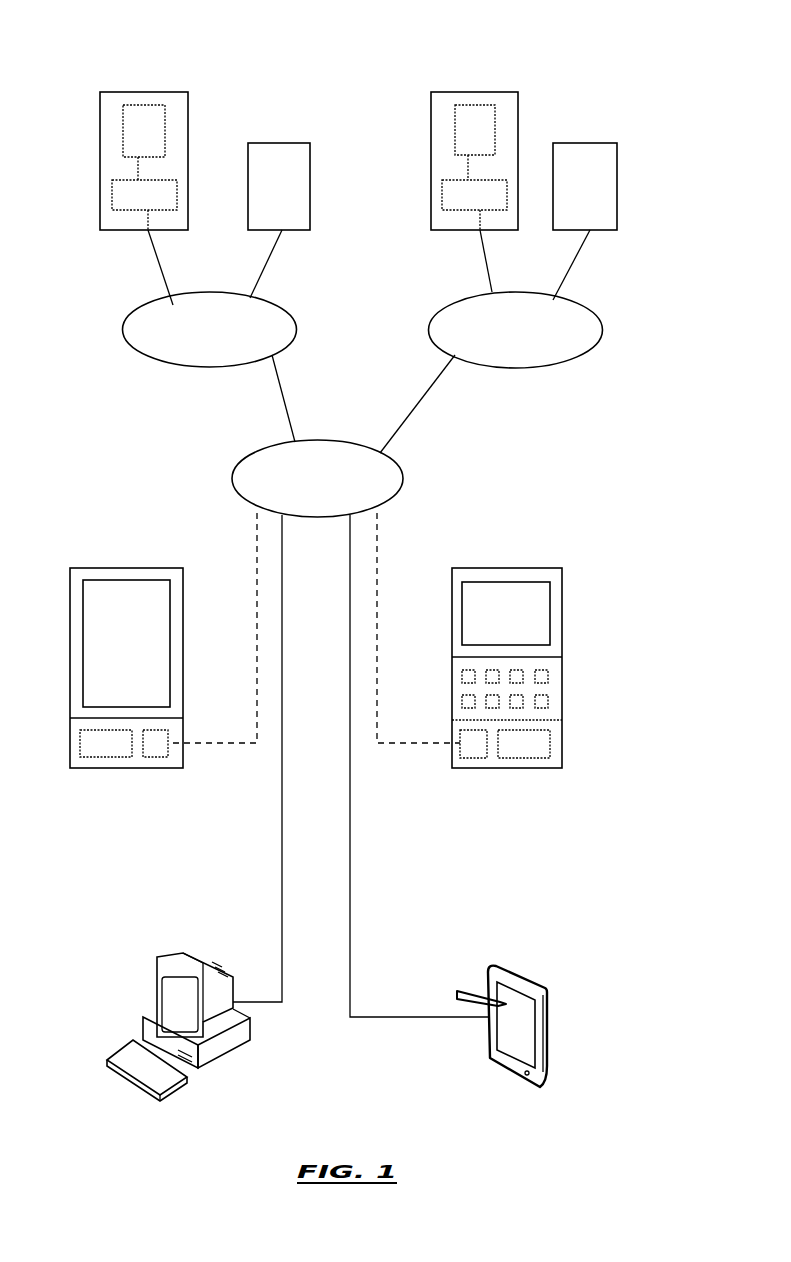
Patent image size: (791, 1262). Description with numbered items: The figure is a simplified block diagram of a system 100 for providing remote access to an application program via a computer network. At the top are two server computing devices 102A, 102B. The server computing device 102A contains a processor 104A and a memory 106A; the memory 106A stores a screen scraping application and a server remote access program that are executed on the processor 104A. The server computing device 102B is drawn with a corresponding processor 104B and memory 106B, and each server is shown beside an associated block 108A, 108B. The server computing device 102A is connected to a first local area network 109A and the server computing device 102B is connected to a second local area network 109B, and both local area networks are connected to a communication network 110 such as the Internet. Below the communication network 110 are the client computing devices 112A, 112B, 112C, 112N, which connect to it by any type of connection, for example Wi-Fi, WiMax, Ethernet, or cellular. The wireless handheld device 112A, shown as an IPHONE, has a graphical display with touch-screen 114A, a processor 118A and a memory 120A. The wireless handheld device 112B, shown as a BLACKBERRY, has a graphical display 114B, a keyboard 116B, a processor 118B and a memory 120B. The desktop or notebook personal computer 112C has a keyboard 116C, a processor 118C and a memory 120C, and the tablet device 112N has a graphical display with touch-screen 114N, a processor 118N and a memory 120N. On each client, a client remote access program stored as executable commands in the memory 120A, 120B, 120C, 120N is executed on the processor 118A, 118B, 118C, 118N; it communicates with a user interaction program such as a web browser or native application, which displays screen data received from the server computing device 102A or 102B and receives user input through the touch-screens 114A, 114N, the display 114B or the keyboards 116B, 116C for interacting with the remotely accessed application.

The system 100 is at (620, 65).
The server computing device 102A is at (137, 92).
The server computing device 102B is at (478, 92).
The processor 104A is at (137, 192).
The memory 104B is at (478, 193).
The memory 106A is at (150, 118).
The processor 106B is at (480, 118).
The database 108A is at (272, 182).
The database 108B is at (592, 182).
The first Local Area Network (LAN) 109A is at (247, 318).
The second Local Area Network (LAN) 109B is at (563, 320).
The communication network 110 is at (378, 478).
The client computing device (IPHONE) 112A is at (70, 598).
The client computing device (BLACKBERRY) 112B is at (548, 577).
The desktop/notebook personal computer 112C is at (173, 1029).
The tablet device 112N is at (510, 1030).
The graphical display with touch-screen 114A is at (120, 647).
The graphical display 114B is at (512, 612).
The graphical display with touch-screen 114N is at (512, 1042).
The keyboard 116B is at (537, 688).
The keyboard 116C is at (128, 1082).
The processor 118A is at (157, 747).
The processor 118B is at (475, 747).
The processor 118C is at (217, 1055).
The processor 118N is at (543, 1065).
The memory 120A is at (108, 748).
The memory 120B is at (523, 748).
The memory 120C is at (210, 1050).
The memory 120N is at (538, 1053).